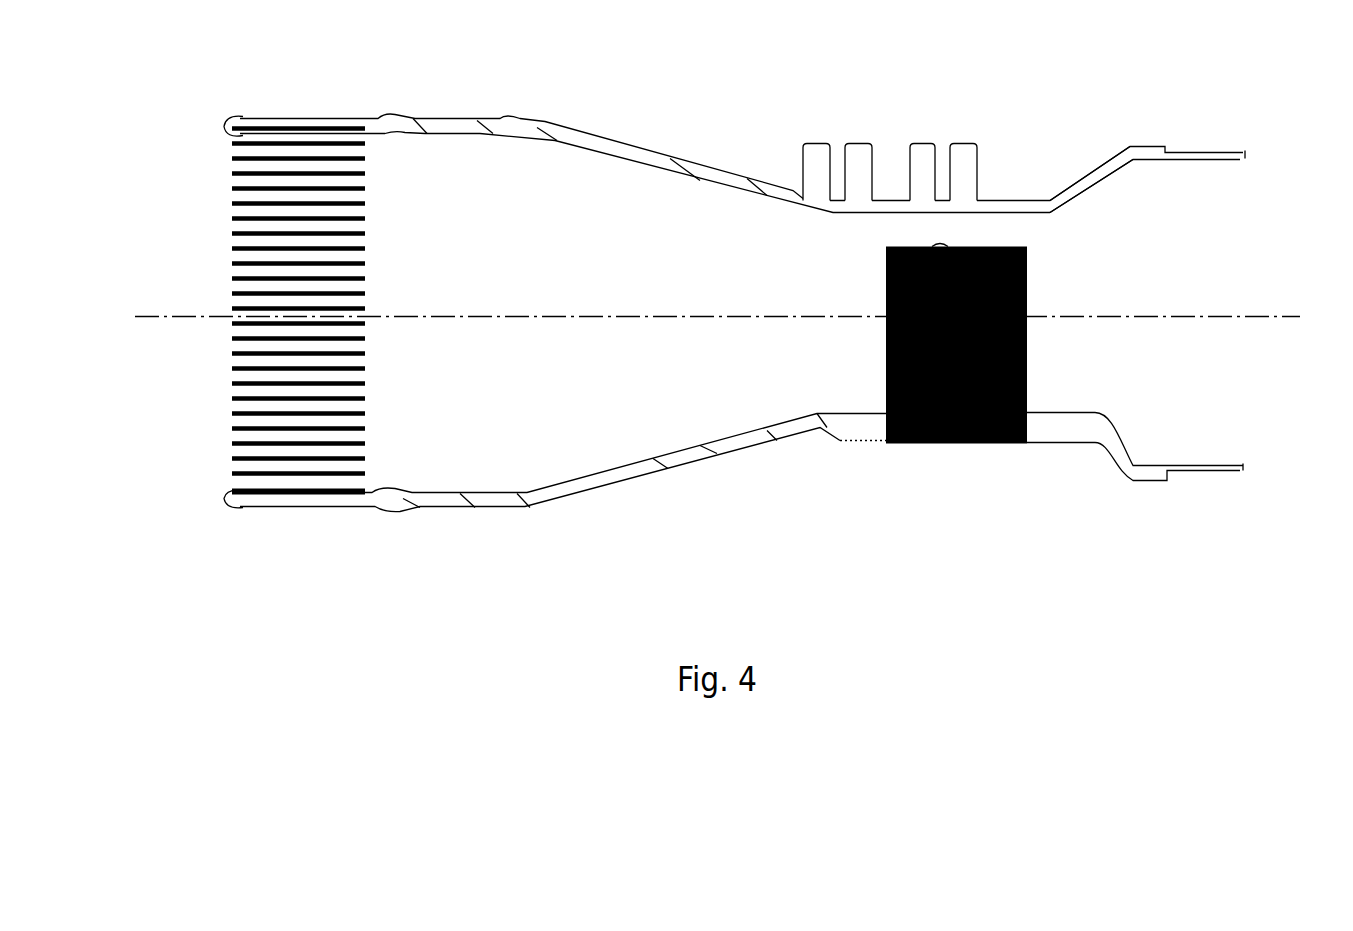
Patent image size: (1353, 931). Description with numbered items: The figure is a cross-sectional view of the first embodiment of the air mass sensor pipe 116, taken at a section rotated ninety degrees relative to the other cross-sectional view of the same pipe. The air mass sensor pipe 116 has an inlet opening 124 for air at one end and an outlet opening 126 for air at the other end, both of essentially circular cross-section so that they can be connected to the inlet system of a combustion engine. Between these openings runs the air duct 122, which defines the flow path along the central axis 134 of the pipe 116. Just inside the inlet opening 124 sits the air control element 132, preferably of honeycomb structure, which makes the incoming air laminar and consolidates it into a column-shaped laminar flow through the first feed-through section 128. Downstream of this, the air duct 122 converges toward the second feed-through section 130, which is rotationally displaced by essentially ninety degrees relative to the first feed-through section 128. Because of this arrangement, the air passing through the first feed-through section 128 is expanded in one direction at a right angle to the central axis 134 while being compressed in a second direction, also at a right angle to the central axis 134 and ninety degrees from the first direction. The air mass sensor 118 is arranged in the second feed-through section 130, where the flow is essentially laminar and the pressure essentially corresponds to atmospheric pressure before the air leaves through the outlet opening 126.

The air mass sensor pipe 116 is at (453, 118).
The air mass sensor 118 is at (1030, 358).
The air duct 122 is at (594, 138).
The inlet opening 124 is at (228, 138).
The outlet opening 126 is at (1217, 166).
The first feed-through section 128 is at (448, 492).
The second feed-through section 130 is at (1033, 198).
The air control element 132 is at (238, 247).
The central axis 134 is at (167, 318).